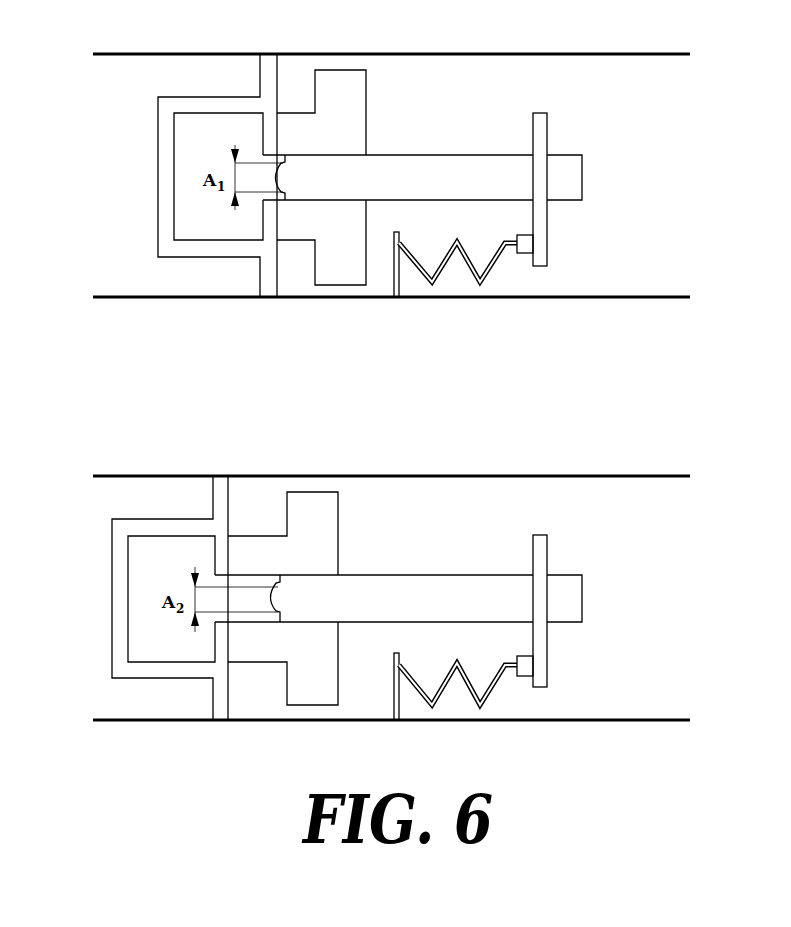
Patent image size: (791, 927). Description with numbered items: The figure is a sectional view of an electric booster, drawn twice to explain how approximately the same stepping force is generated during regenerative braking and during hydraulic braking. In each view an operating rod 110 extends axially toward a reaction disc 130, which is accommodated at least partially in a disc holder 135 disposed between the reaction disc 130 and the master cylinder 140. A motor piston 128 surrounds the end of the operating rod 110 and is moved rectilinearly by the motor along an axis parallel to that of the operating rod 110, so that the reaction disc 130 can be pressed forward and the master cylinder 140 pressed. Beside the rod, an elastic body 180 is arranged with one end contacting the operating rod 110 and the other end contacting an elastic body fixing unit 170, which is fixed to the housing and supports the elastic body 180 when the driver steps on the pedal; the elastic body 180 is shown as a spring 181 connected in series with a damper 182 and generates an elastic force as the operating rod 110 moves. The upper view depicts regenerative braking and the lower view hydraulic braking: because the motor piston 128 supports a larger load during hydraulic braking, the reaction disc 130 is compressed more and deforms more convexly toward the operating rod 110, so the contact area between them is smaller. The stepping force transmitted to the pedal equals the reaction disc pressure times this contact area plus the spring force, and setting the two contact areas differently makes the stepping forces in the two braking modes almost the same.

The operating rod 110 is at (403, 160).
The motor piston 128 is at (335, 73).
The reaction disc 130 is at (182, 194).
The disc holder 135 is at (160, 122).
The master cylinder 140 is at (183, 300).
The elastic body fixing unit 170 is at (395, 300).
The elastic body 180 is at (466, 305).
The spring 181 is at (438, 283).
The damper 182 is at (527, 254).